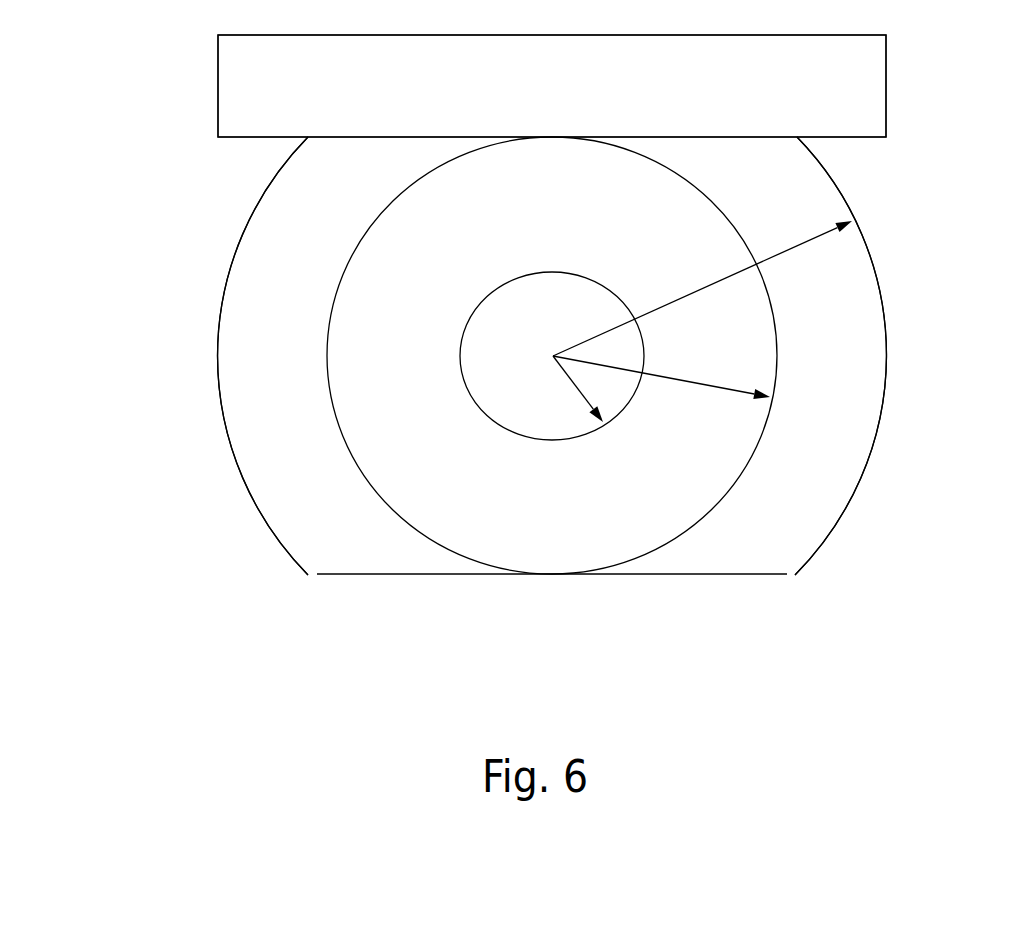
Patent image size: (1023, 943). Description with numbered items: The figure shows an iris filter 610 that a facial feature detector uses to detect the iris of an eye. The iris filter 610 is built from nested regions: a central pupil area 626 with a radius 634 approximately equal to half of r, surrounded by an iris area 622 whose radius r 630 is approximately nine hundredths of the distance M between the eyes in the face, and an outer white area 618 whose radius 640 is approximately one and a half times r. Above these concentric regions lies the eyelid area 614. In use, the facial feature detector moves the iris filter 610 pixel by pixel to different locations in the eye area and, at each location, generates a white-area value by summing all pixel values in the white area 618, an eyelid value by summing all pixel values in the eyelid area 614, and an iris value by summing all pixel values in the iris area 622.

The iris filter 610 is at (781, 730).
The eyelid area 614 is at (218, 137).
The white area 618 is at (285, 237).
The iris area 622 is at (352, 356).
The pupil area 626 is at (485, 405).
The radius r 630 is at (697, 381).
The radius 634 is at (587, 390).
The radius 640 is at (787, 255).